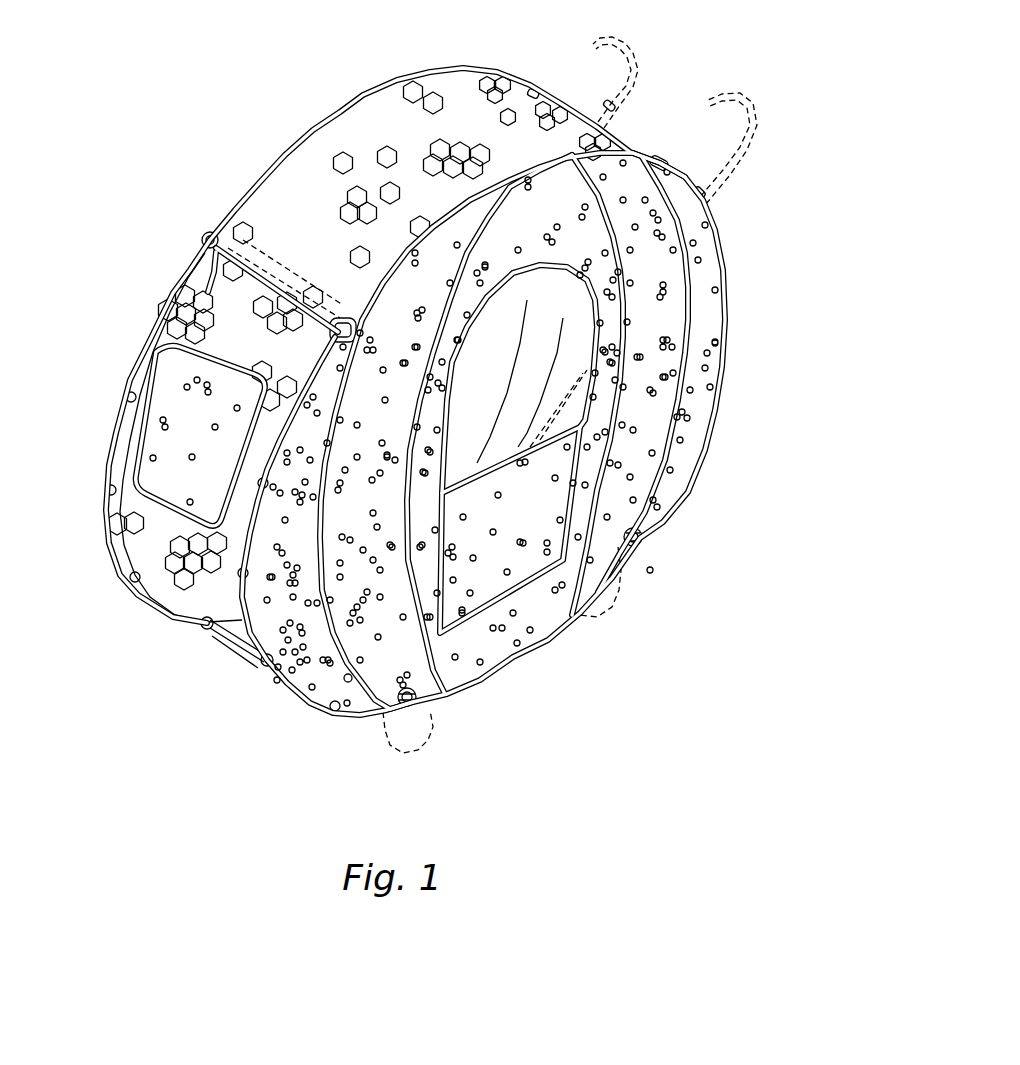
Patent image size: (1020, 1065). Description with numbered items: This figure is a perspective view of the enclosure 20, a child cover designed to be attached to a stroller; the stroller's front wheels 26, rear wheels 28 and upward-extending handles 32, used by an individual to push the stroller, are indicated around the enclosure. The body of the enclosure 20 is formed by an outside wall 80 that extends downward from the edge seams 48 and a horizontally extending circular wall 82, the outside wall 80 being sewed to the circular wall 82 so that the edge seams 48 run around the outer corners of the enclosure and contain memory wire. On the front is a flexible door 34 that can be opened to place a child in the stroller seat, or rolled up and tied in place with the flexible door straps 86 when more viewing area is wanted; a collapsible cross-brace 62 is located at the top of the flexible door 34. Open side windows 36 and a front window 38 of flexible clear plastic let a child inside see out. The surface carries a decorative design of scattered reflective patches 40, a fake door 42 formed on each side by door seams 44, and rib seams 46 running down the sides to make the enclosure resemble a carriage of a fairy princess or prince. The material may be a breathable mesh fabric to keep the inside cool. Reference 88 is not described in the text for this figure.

The enclosure 20 is at (683, 507).
The front wheels 26 is at (383, 740).
The rear wheels 28 is at (613, 600).
The handles 32 is at (715, 103).
The flexible door 34 is at (223, 339).
The side windows 36 is at (519, 358).
The front window 38 is at (177, 436).
The reflective patches 40 is at (433, 153).
The fake door 42 is at (504, 526).
The door seams 44 is at (445, 467).
The rib seams 46 is at (405, 545).
The edge seams 48 is at (318, 127).
The collapsible cross-brace 62 is at (268, 263).
The outside wall 80 is at (520, 222).
The circular wall 82 is at (295, 199).
The flexible door straps 86 is at (205, 278).
The attachment loops 88 is at (112, 427).